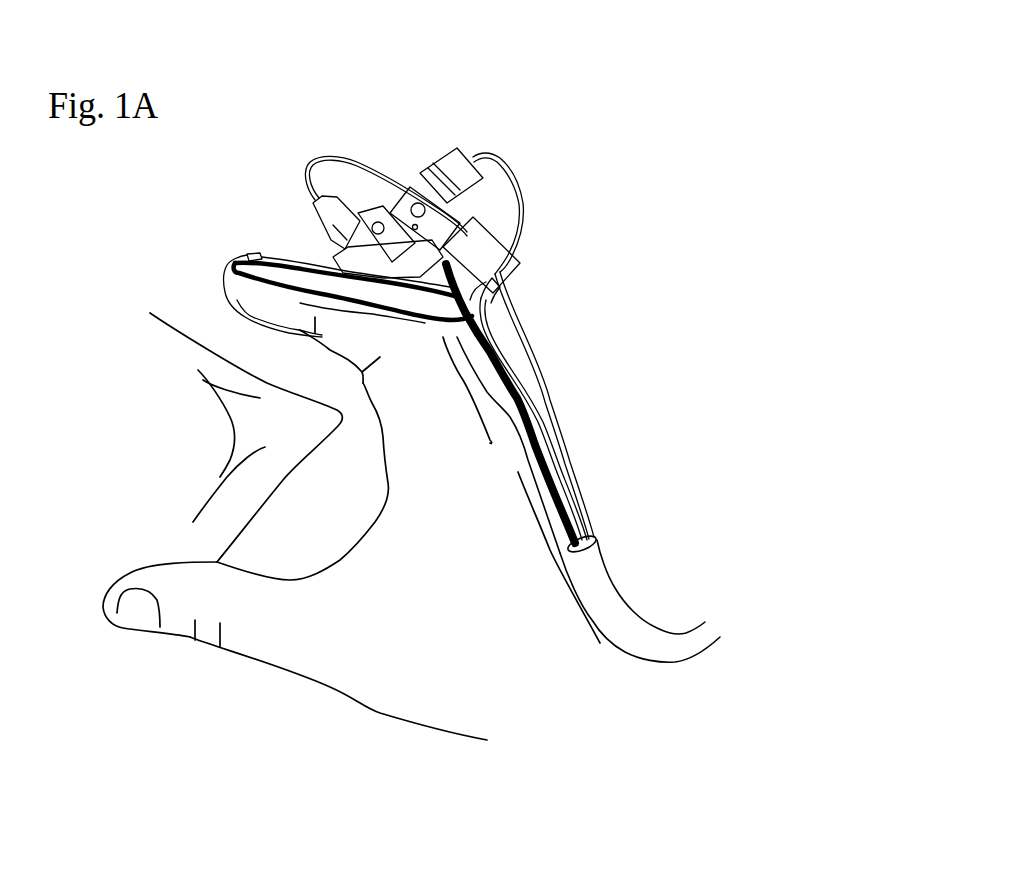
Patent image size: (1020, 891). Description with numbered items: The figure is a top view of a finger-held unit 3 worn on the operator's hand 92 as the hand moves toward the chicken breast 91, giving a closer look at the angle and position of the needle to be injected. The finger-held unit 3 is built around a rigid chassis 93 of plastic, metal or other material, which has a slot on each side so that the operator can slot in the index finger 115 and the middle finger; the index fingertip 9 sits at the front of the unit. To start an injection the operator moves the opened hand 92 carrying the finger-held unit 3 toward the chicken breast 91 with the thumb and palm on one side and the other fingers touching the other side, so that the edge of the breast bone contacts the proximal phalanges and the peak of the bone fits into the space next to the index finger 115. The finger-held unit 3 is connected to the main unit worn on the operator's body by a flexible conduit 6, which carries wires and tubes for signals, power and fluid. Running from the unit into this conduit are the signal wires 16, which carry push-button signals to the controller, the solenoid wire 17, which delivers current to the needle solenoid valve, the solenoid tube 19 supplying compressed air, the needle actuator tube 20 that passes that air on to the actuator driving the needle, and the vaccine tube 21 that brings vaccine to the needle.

The finger-held unit 3 is at (412, 170).
The vaccine tube 21 is at (517, 178).
The chassis 93 is at (313, 283).
The index fingertip 9 is at (252, 298).
The solenoid wire 17 is at (470, 312).
The signal wires 16 is at (482, 358).
The needle actuator tube 20 is at (533, 395).
The solenoid tube 19 is at (577, 462).
The flexible conduit 6 is at (610, 565).
The index finger 115 is at (373, 328).
The chicken breast 91 is at (198, 408).
The hand 92 is at (483, 569).